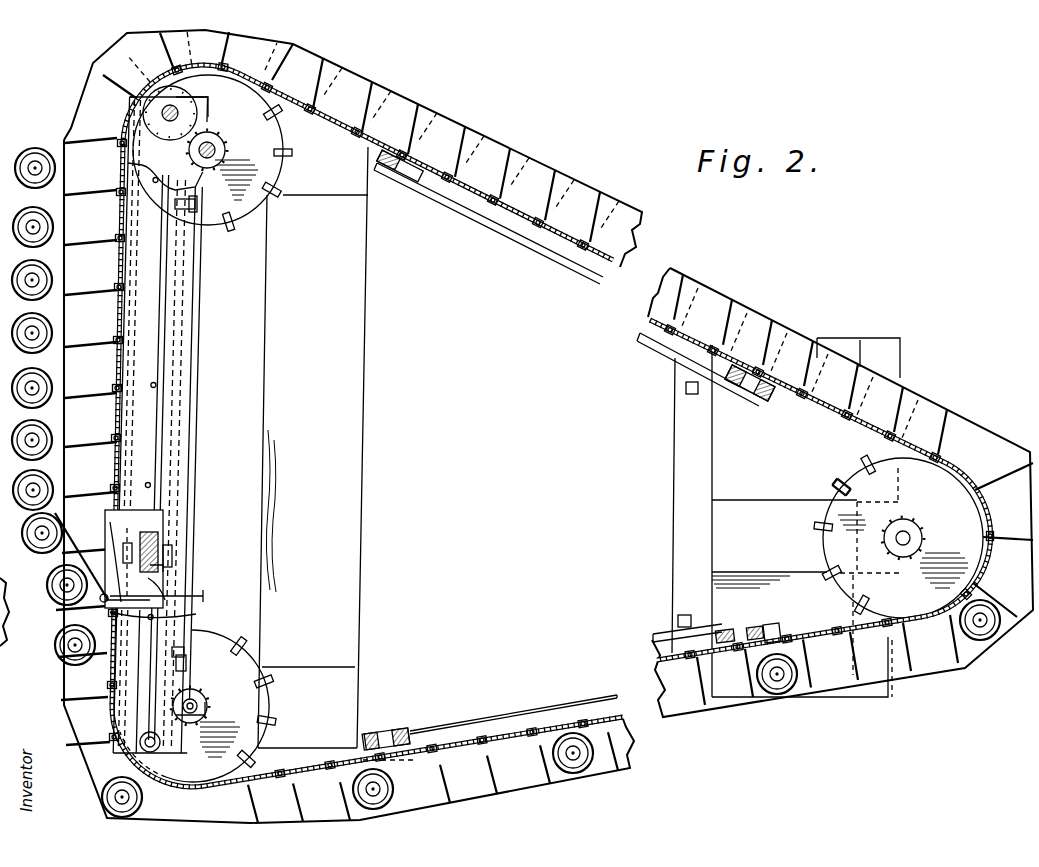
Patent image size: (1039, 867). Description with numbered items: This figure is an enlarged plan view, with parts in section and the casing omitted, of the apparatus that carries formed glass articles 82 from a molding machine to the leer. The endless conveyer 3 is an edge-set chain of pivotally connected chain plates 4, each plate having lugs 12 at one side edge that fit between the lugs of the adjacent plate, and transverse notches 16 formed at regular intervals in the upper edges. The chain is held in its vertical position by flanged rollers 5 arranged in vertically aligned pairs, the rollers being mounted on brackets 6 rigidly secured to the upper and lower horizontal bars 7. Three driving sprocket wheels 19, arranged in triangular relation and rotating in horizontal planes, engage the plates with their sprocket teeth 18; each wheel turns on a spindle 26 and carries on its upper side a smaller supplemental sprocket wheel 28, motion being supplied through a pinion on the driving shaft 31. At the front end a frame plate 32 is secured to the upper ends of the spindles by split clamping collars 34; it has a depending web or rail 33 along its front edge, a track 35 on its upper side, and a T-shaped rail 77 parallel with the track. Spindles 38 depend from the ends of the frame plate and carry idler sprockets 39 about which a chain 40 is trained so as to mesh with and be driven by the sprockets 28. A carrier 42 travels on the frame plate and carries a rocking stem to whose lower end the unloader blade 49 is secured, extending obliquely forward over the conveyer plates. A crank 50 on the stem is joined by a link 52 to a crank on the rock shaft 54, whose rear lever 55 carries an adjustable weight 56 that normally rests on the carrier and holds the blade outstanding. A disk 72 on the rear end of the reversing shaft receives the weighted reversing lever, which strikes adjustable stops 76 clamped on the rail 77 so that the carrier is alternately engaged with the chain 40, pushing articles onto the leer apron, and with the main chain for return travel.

The endless conveyer 3 is at (164, 596).
The chain plates 4 is at (673, 343).
The flanged rollers 5 is at (776, 636).
The connecting plates or brackets 6 is at (763, 622).
The horizontal bars 7 is at (573, 258).
The lugs 12 is at (785, 322).
The transverse notches 16 is at (113, 362).
The sprocket teeth 18 is at (841, 481).
The driving sprocket wheels 19 is at (280, 123).
The spindles 26 is at (212, 160).
The supplemental sprocket wheel 28 is at (214, 148).
The driving shaft 31 is at (104, 599).
The frame plate 32 is at (204, 361).
The depending web or rail 33 is at (130, 106).
The split clamping collars 34 is at (210, 728).
The track 35 is at (170, 427).
The spindles 38 is at (166, 108).
The idler sprockets 39 is at (188, 96).
The chain 40 is at (167, 143).
The carrier 42 is at (132, 553).
The unloader blade 49 is at (70, 534).
The crank 50 is at (198, 614).
The link 52 is at (134, 559).
The rock shaft 54 is at (135, 586).
The crank arm or lever 55 is at (172, 556).
The weight 56 is at (150, 540).
The disk 72 is at (165, 566).
The stops 76 is at (176, 205).
The T rail 77 is at (194, 440).
The articles 82 is at (38, 450).